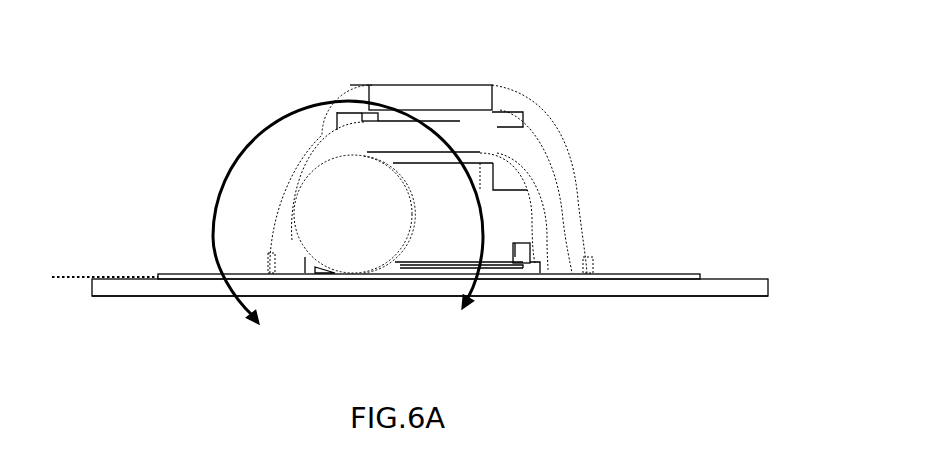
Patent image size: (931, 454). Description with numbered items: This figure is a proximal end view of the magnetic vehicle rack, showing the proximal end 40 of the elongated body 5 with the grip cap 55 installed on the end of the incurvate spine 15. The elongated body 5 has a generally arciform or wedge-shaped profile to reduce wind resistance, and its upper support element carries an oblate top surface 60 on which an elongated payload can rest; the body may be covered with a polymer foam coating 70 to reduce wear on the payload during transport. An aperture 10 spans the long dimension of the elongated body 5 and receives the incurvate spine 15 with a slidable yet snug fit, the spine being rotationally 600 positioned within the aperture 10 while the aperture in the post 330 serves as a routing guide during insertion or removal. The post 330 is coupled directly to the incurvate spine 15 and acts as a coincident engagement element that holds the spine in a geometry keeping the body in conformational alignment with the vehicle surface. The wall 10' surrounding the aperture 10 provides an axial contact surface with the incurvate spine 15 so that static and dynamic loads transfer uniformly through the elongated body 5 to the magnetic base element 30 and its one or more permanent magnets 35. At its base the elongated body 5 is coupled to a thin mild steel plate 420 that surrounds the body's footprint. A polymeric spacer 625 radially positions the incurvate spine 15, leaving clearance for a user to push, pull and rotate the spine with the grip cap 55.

The rotational positioning 600 is at (234, 163).
The post 330 is at (444, 110).
The oblate top surface 60 is at (480, 122).
The polymer foam coating 70 is at (513, 148).
The elongated body 5 is at (520, 182).
The grip cap 55 is at (362, 222).
The incurvate spine 15 is at (455, 220).
The interior wall 10' is at (553, 211).
The thin mild steel plate 420 is at (670, 275).
The proximal end 40 is at (89, 276).
The base element 30 is at (782, 270).
The polymeric spacer 625 is at (435, 268).
The aperture 10 is at (594, 322).
The permanent magnets 35 is at (703, 287).